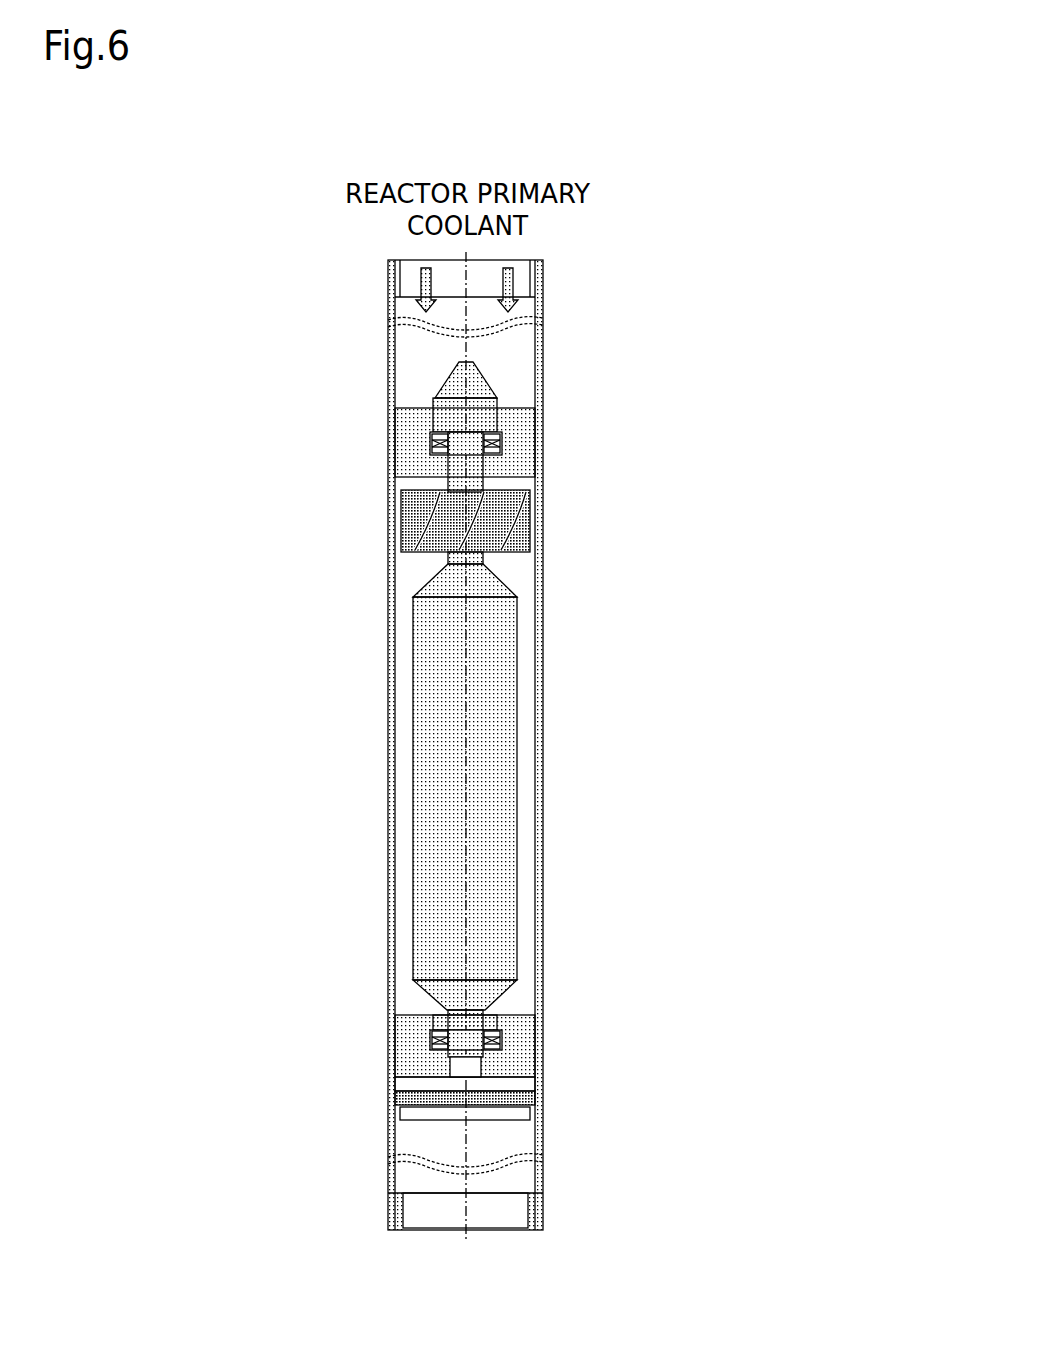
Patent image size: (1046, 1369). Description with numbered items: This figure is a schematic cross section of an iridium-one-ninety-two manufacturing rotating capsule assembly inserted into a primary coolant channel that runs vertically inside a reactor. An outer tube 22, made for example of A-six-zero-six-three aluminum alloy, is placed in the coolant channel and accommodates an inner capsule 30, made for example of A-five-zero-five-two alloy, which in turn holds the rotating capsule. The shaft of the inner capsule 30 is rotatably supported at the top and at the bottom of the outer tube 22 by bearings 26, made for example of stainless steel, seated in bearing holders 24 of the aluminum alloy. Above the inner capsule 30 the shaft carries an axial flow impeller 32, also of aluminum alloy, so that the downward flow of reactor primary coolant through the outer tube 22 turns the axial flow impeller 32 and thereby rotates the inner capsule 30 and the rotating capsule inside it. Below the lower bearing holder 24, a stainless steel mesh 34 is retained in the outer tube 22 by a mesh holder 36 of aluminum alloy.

The outer tube 22 is at (546, 300).
The bearing holder 24 is at (528, 407).
The bearing 26 is at (501, 446).
The inner capsule 30 is at (517, 750).
The axial flow impeller 32 is at (534, 520).
The mesh 34 is at (522, 1090).
The mesh holder 36 is at (542, 1101).